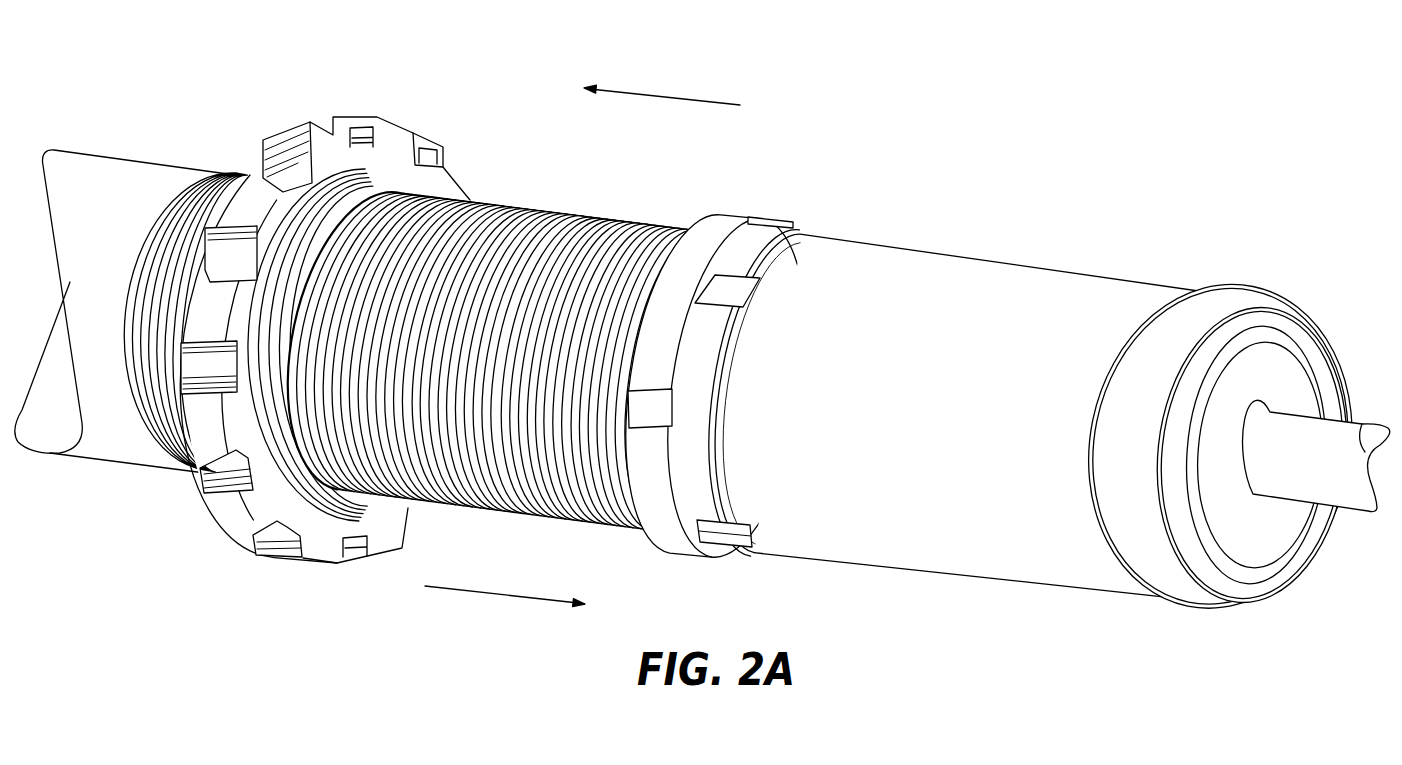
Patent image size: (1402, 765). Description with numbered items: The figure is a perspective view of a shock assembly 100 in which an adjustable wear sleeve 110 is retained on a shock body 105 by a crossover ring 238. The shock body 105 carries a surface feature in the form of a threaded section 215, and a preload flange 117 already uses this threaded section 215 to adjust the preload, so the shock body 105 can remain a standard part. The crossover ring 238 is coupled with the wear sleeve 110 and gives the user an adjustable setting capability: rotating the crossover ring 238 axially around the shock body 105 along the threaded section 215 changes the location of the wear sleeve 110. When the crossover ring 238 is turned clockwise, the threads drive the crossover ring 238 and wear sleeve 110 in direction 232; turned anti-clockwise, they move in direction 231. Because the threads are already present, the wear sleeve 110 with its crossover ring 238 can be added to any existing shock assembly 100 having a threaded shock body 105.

The shock assembly 100 is at (702, 345).
The shock body 105 is at (1243, 298).
The wear sleeve 110 is at (1022, 266).
The preload flange 117 is at (395, 121).
The threaded section 215 is at (573, 212).
The direction 231 is at (502, 596).
The direction 232 is at (665, 97).
The crossover ring 238 is at (792, 223).